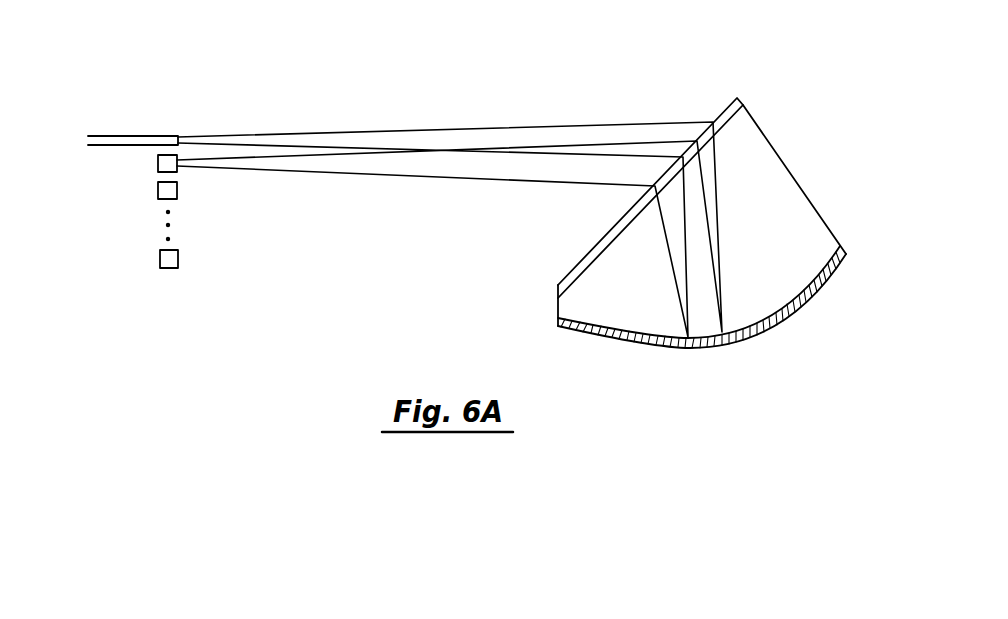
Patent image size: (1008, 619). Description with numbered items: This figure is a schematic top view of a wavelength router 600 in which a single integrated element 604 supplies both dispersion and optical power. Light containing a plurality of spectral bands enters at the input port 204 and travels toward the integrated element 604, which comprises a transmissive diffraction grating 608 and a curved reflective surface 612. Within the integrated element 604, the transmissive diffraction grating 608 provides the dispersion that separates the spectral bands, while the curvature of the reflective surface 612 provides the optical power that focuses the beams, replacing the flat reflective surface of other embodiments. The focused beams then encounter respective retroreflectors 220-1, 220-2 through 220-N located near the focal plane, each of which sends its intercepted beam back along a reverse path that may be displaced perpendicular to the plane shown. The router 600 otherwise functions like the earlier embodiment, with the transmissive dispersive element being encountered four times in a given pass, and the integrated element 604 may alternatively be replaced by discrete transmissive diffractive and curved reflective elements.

The wavelength router 600 is at (470, 105).
The input port 204 is at (178, 138).
The retroreflector 220-1 is at (157, 163).
The retroreflector 220-2 is at (157, 191).
The retroreflector 220-N is at (160, 259).
The transmissive diffraction grating 608 is at (740, 100).
The integrated element 604 is at (790, 203).
The curved reflective surface 612 is at (835, 279).